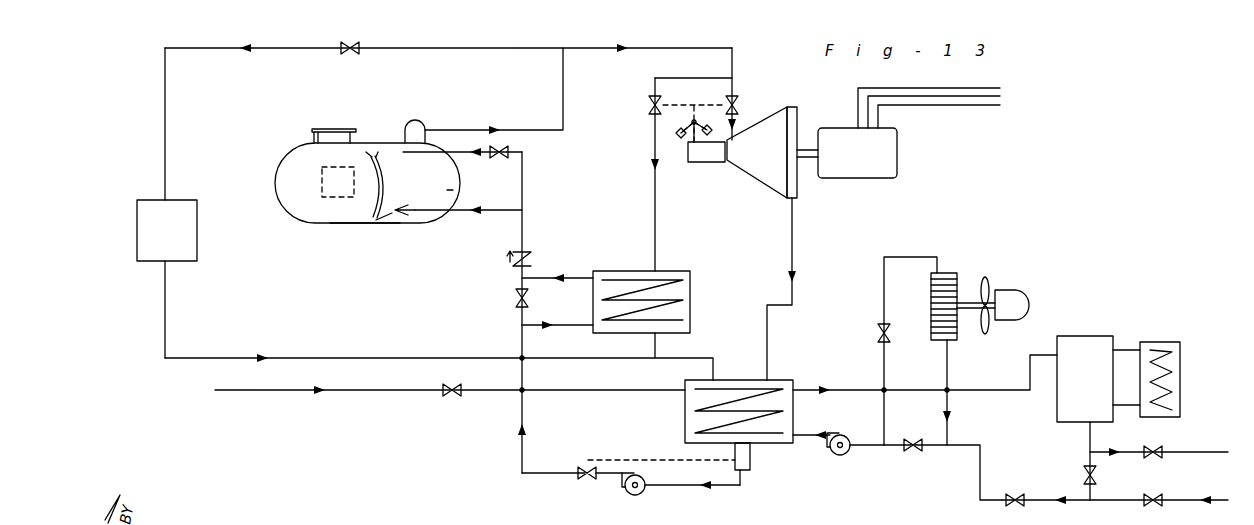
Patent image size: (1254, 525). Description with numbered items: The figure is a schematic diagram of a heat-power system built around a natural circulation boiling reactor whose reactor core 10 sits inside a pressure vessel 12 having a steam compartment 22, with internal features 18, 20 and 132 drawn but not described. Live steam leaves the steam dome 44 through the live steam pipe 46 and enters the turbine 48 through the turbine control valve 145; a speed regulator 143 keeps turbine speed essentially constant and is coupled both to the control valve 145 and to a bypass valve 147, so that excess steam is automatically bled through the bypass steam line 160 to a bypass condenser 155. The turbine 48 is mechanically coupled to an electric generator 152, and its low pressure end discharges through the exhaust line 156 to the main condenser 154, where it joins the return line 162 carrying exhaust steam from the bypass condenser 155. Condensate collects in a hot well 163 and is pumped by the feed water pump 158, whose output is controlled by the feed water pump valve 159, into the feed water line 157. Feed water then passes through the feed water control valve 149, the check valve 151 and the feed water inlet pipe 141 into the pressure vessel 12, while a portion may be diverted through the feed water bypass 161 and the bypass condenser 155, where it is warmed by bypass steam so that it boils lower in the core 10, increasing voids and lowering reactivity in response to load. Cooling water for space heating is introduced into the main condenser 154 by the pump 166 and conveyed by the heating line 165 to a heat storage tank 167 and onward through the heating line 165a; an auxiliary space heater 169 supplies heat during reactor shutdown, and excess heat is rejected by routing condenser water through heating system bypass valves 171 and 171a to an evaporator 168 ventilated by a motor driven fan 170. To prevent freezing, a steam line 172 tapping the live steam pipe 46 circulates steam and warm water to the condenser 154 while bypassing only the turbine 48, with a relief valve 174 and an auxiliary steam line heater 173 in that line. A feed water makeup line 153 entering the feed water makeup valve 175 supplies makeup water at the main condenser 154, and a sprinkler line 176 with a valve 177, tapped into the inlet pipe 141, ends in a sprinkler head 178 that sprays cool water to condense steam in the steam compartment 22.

The reactor core 10 is at (322, 172).
The pressure vessel 12 is at (272, 204).
The baffle 18 is at (371, 170).
The vessel bottom 20 is at (321, 223).
The steam compartment 22 is at (447, 190).
The steam dome 44 is at (403, 130).
The live steam pipe 46 is at (455, 136).
The turbine 48 is at (750, 180).
The injection nozzle 132 is at (400, 207).
The feed water inlet pipe 141 is at (490, 214).
The speed regulator 143 is at (682, 150).
The turbine control valve 145 is at (738, 106).
The bypass valve 147 is at (648, 117).
The feed water control valve 149 is at (513, 298).
The check valve 151 is at (531, 258).
The electric generator 152 is at (888, 160).
The feed water makeup line 153 is at (284, 395).
The main condenser 154 is at (688, 410).
The bypass condenser 155 is at (678, 272).
The exhaust line 156 is at (795, 245).
The feed water line 157 is at (510, 440).
The feed water pump 158 is at (628, 492).
The feed water pump valve 159 is at (584, 480).
The bypass steam line 160 is at (655, 204).
The feed water bypass 161 is at (573, 315).
The return line 162 is at (682, 358).
The hot well 163 is at (734, 459).
The heating line 165 is at (1004, 386).
The heating line 165a is at (1172, 454).
The pump 166 is at (833, 450).
The heat storage tank 167 is at (1075, 344).
The evaporator 168 is at (944, 273).
The auxiliary space heater 169 is at (1160, 344).
The motor driven fan 170 is at (1005, 294).
The heating system bypass valve 171 is at (880, 336).
The heating system bypass valve 171a is at (920, 450).
The steam line 172 is at (168, 110).
The auxiliary steam line heater 173 is at (147, 254).
The relief valve 174 is at (358, 52).
The feed water makeup valve 175 is at (445, 394).
The sprinkler line 176 is at (525, 188).
The valve 177 is at (512, 152).
The sprinkler head 178 is at (422, 154).